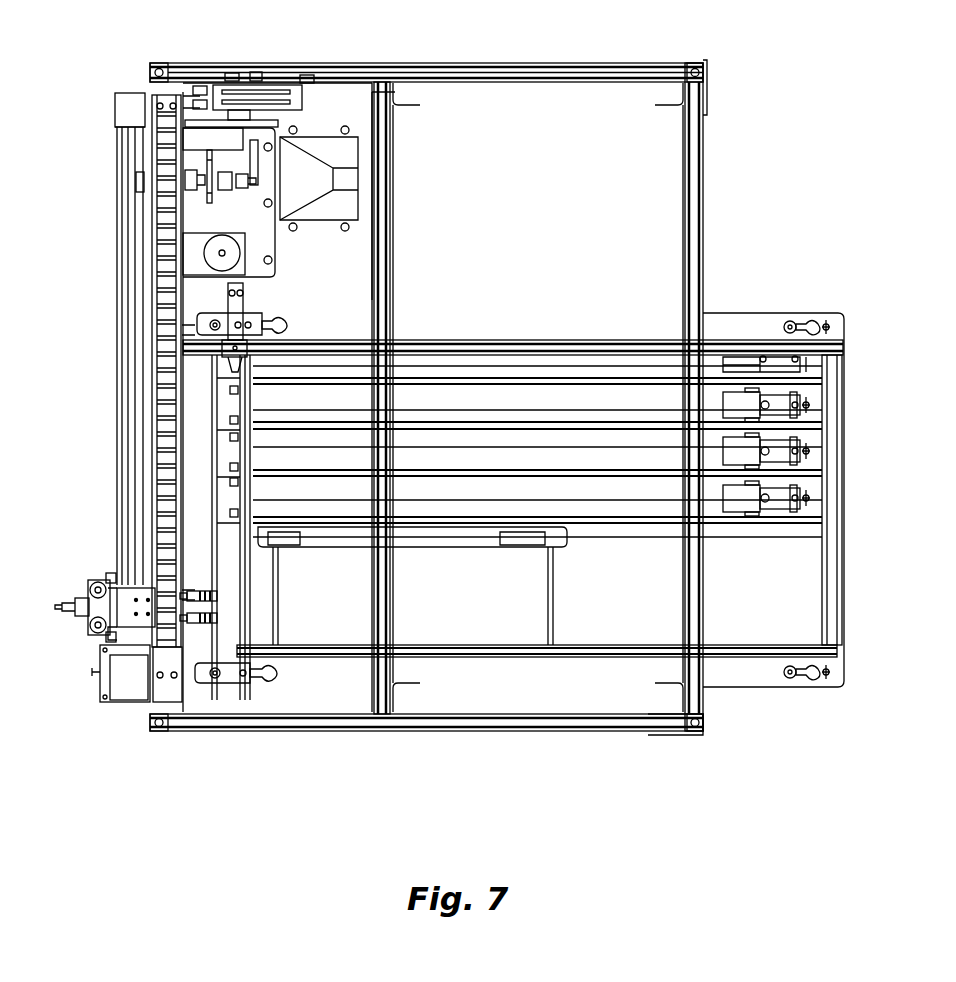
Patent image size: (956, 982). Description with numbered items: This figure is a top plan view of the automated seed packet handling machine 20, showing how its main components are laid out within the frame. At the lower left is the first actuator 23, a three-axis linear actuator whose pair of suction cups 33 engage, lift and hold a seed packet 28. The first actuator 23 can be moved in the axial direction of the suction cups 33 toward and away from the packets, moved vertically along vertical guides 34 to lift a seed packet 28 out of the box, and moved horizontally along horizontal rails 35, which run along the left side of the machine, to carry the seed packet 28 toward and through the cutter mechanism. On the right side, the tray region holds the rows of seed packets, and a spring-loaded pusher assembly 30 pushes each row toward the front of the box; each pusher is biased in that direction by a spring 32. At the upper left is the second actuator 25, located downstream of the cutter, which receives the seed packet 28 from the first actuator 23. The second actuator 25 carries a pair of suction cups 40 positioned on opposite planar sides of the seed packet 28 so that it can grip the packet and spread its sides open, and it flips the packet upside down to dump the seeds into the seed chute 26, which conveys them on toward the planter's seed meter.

The automated seed packet handling machine 20 is at (352, 762).
The first actuator 23 is at (135, 615).
The second actuator 25 is at (253, 88).
The seed chute 26 is at (318, 182).
The seed packet 28 is at (205, 198).
The spring-loaded pusher assembly 30 is at (773, 395).
The spring 32 is at (745, 495).
The suction cups 33 is at (217, 618).
The vertical guides 34 is at (98, 580).
The horizontal rails 35 is at (123, 205).
The suction cups 40 is at (222, 185).